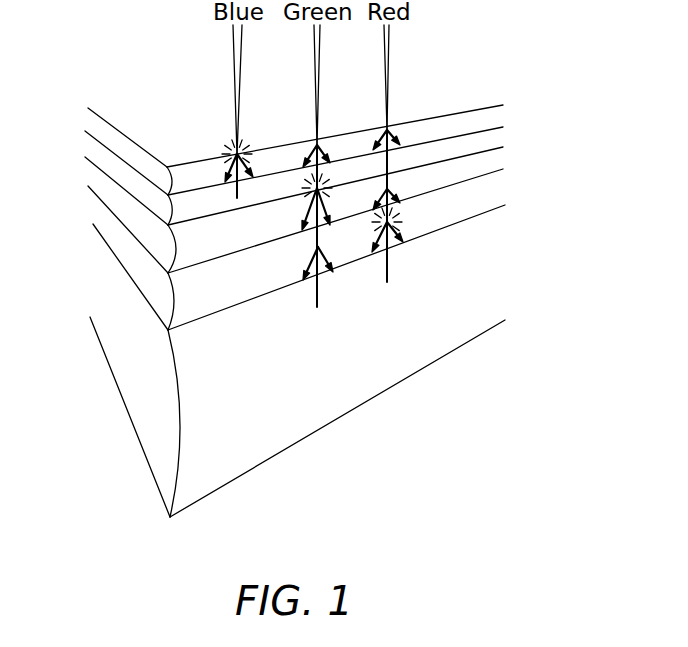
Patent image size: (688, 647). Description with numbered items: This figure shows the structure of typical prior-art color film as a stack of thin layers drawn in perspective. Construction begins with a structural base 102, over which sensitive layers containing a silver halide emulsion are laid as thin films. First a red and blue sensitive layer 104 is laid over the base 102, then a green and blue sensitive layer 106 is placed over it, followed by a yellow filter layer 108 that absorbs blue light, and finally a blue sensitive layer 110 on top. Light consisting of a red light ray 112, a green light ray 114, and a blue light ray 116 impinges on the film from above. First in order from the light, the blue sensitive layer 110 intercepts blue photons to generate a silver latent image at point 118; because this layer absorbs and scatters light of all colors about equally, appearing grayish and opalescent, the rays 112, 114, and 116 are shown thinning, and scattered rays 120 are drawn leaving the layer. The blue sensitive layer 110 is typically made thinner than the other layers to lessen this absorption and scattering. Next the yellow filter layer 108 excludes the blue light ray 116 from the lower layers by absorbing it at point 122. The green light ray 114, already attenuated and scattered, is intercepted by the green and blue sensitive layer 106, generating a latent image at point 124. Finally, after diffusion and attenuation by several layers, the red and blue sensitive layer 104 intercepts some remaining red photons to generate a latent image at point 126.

The structural base 102 is at (334, 361).
The red and blue sensitive layer 104 is at (331, 249).
The green and blue sensitive layer 106 is at (331, 205).
The yellow filter layer 108 is at (331, 166).
The blue sensitive layer 110 is at (335, 135).
The red light ray 112 is at (423, 153).
The green light ray 114 is at (348, 166).
The blue light ray 116 is at (266, 89).
The point 118 is at (202, 146).
The scattered rays 120 is at (269, 147).
The point 122 is at (140, 211).
The point 124 is at (288, 205).
The point 126 is at (420, 227).